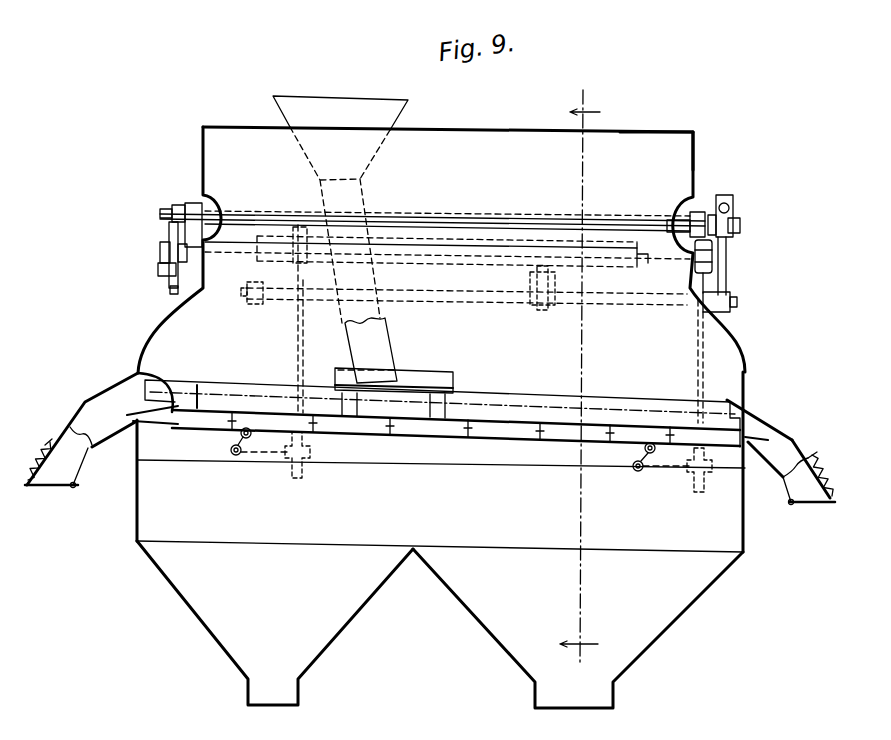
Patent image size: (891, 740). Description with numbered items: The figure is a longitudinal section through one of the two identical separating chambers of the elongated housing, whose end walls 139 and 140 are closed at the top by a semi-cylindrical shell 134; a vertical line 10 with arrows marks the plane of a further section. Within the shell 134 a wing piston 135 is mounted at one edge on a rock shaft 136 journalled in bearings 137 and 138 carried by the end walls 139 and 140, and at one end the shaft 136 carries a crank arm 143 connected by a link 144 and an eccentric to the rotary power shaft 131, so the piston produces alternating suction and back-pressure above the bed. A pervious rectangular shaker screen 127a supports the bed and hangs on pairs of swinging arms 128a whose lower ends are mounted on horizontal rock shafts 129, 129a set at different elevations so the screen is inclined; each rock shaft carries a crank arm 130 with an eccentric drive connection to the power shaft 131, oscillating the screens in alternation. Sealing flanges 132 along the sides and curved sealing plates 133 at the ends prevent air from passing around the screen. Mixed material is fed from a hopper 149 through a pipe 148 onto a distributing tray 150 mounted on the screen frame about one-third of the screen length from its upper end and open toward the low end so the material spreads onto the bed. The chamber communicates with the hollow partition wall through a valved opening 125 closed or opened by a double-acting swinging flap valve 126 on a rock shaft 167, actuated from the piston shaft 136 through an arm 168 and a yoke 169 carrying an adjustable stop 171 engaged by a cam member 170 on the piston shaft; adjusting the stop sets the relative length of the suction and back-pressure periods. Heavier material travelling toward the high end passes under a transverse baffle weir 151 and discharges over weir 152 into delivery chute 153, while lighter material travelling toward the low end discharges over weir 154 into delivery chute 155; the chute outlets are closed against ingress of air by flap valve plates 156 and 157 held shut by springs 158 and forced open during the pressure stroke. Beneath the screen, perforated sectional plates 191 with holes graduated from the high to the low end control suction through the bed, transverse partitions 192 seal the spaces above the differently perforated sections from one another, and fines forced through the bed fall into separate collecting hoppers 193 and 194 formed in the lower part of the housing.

The centerline / section axis 10 is at (580, 377).
The valved opening 125 is at (606, 262).
The double-acting swinging flap valve 126 is at (638, 264).
The shaker screen 127a is at (614, 422).
The swinging arms 128a is at (240, 432).
The rock shaft 129 is at (637, 471).
The rock shaft 129a is at (232, 456).
The crank arm 130 is at (270, 460).
The rotary power shaft 131 is at (472, 262).
The sealing flanges 132 is at (547, 398).
The curved sealing plates 133 is at (157, 380).
The semi-cylindrical shell 134 is at (668, 135).
The wing piston 135 is at (512, 143).
The rock shaft 136 is at (170, 213).
The bearing 137 is at (197, 203).
The bearing 138 is at (697, 210).
The end wall 139 is at (203, 153).
The end wall 140 is at (694, 156).
The crank arm 143 is at (163, 253).
The link 144 is at (153, 255).
The pipe 148 is at (384, 347).
The hopper 149 is at (383, 103).
The distributing tray 150 is at (423, 377).
The transverse baffle weir 151 is at (203, 387).
The weir 152 is at (146, 424).
The delivery chute 153 is at (120, 380).
The weir 154 is at (752, 420).
The delivery chute 155 is at (790, 440).
The flap valve plate 156 is at (48, 487).
The flap valve plate 157 is at (817, 502).
The springs 158 is at (40, 447).
The rock shaft 167 is at (500, 303).
The arm 168 is at (727, 264).
The yoke 169 is at (730, 235).
The cam member 170 is at (737, 198).
The adjustable stop 171 is at (730, 207).
The perforated sectional plates 191 is at (425, 435).
The transverse partitions 192 is at (528, 440).
The collecting hopper 193 is at (183, 610).
The collecting hopper 194 is at (483, 630).